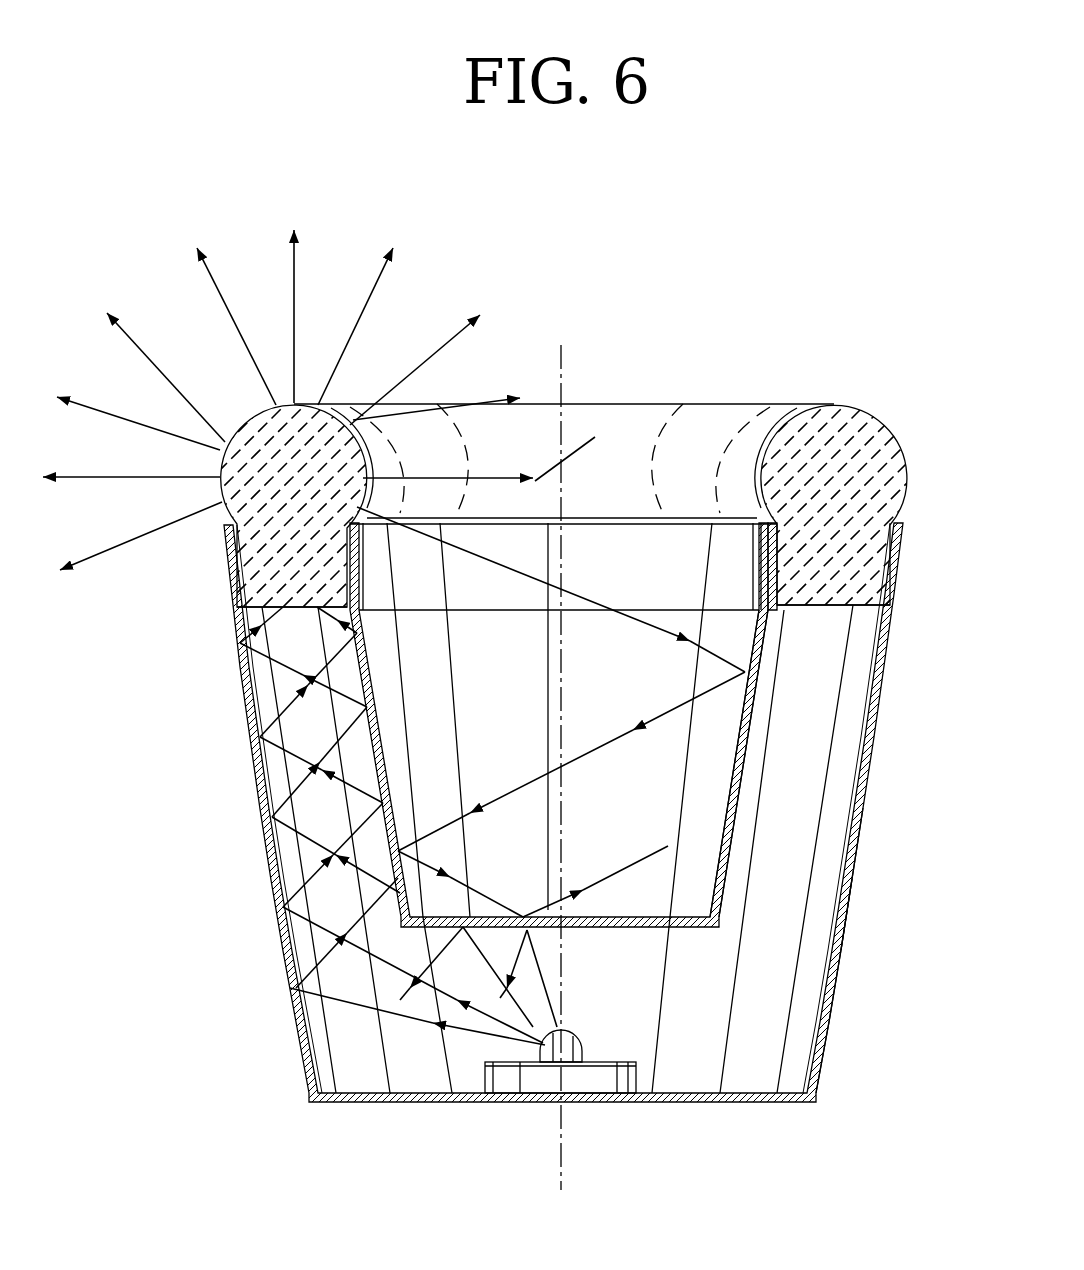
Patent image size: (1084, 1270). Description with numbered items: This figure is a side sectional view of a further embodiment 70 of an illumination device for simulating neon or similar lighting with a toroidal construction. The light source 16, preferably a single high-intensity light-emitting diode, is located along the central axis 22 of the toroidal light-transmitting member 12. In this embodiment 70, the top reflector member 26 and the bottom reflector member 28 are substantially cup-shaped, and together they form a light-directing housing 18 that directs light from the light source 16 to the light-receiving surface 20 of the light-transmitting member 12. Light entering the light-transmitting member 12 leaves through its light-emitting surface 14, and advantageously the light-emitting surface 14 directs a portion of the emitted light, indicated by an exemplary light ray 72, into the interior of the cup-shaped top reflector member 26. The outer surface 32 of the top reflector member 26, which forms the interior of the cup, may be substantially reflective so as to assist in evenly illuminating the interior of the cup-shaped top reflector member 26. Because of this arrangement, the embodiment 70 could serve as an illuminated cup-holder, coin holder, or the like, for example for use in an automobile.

The embodiment 70 is at (127, 163).
The toroidal light-transmitting member 12 is at (855, 412).
The light-emitting surface 14 is at (227, 428).
The light source 16 is at (557, 1053).
The light-directing housing 18 is at (770, 644).
The light-receiving surface 20 is at (247, 691).
The central axis 22 is at (563, 1140).
The top reflector member 26 is at (780, 752).
The bottom reflector member 28 is at (836, 956).
The outer surface 32 is at (737, 695).
The light ray 72 is at (575, 605).